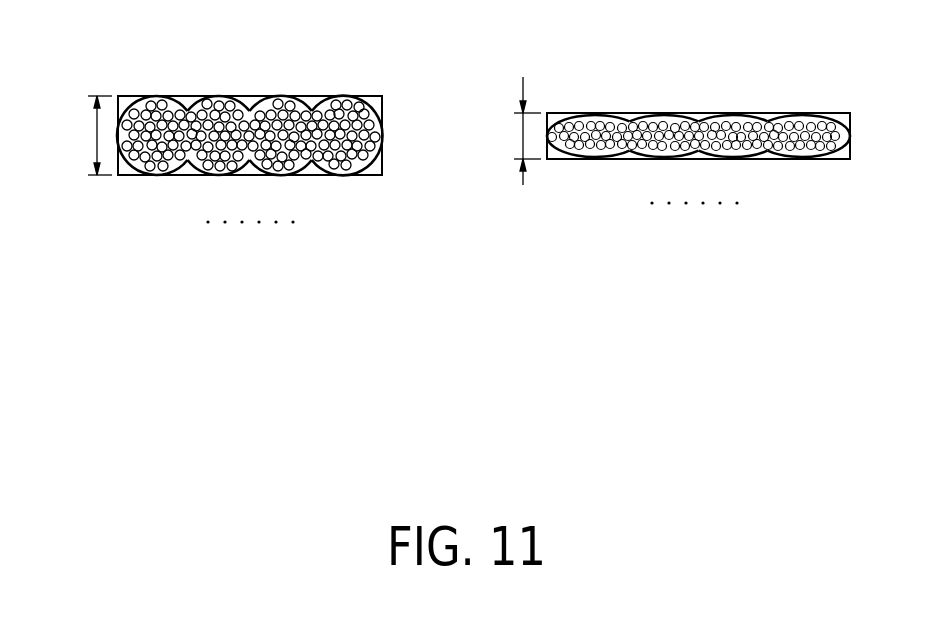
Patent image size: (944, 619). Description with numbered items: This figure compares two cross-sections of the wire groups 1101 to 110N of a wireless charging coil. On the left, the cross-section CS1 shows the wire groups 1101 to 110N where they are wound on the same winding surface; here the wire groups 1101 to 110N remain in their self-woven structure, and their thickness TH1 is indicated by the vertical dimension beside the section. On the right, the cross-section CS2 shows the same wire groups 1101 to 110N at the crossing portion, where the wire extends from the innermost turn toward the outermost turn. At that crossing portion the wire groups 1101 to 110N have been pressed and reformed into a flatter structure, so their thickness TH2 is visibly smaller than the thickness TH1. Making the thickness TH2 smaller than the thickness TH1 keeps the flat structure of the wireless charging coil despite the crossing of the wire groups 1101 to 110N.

The wire group 1101 is at (155, 175).
The wire group 110N is at (342, 175).
The cross-section of the wire groups wound on the same winding surface CS1 is at (247, 115).
The cross-section of the crossing portion CS2 is at (698, 105).
The thickness of the wire groups wound on the same winding surface TH1 is at (77, 135).
The thickness of the wire groups at the crossing portion TH2 is at (503, 131).